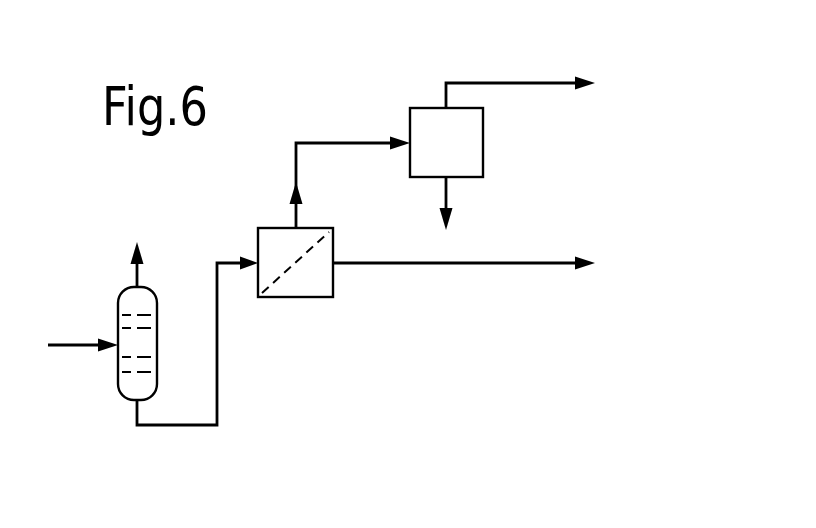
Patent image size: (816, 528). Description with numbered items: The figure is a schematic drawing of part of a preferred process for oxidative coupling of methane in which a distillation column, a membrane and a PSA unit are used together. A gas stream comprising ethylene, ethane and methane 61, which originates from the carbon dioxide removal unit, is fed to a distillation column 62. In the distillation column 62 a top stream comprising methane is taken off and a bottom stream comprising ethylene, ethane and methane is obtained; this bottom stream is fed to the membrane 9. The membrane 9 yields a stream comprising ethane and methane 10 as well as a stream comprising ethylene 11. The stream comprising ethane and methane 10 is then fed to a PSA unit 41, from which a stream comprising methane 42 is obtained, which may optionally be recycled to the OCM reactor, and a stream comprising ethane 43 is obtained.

The gas stream comprising ethylene, ethane and methane 61 is at (83, 330).
The distillation column 62 is at (188, 333).
The membrane 9 is at (295, 245).
The stream comprising ethane and methane 10 is at (350, 169).
The PSA unit 41 is at (446, 142).
The stream comprising methane 42 is at (520, 78).
The stream comprising ethane 43 is at (461, 203).
The stream comprising ethylene 11 is at (464, 249).